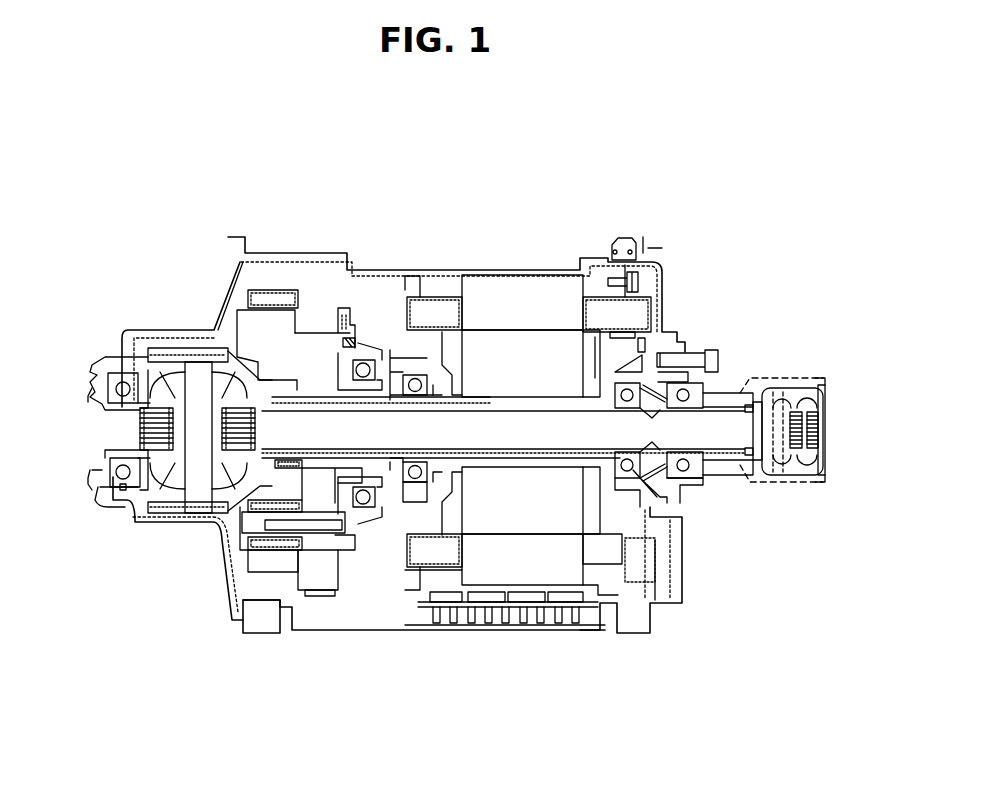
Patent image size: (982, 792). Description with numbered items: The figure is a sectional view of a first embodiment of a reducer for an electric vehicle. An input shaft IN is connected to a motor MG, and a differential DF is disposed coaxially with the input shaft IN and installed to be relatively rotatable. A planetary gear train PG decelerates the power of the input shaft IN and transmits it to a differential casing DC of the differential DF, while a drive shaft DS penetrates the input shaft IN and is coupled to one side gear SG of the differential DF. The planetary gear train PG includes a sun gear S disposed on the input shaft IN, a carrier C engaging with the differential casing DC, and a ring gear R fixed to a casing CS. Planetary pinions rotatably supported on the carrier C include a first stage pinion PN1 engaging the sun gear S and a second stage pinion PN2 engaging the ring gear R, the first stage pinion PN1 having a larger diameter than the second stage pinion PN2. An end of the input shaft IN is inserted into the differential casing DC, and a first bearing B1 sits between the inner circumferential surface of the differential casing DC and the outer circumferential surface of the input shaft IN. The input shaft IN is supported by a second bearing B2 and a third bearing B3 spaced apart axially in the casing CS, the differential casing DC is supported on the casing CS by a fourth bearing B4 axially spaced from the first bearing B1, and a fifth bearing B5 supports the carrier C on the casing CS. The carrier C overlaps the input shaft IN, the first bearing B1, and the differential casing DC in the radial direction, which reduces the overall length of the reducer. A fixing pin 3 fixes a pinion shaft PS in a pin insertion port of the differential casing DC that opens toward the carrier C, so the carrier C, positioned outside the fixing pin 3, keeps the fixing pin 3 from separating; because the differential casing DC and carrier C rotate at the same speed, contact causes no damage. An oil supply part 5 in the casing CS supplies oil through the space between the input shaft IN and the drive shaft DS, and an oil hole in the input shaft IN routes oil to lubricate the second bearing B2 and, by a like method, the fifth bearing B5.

The fixing pin 3 is at (162, 345).
The oil supply part 5 is at (673, 497).
The planetary gear train PG is at (328, 193).
The carrier C is at (252, 335).
The ring gear R is at (276, 297).
The sun gear S is at (316, 390).
The side gear SG is at (238, 378).
The differential casing DC is at (148, 370).
The pinion shaft PS is at (190, 432).
The differential DF is at (145, 465).
The fourth bearing B4 is at (117, 482).
The first bearing B1 is at (280, 468).
The fifth bearing B5 is at (365, 500).
The second bearing B2 is at (415, 480).
The third bearing B3 is at (627, 475).
The first stage pinion PN1 is at (322, 575).
The second stage pinion PN2 is at (268, 550).
The input shaft IN is at (393, 397).
The casing CS is at (437, 270).
The motor MG is at (515, 357).
The drive shaft DS is at (727, 408).